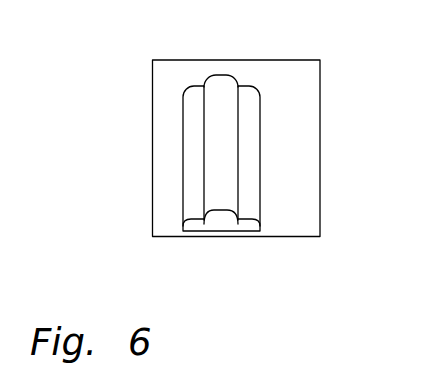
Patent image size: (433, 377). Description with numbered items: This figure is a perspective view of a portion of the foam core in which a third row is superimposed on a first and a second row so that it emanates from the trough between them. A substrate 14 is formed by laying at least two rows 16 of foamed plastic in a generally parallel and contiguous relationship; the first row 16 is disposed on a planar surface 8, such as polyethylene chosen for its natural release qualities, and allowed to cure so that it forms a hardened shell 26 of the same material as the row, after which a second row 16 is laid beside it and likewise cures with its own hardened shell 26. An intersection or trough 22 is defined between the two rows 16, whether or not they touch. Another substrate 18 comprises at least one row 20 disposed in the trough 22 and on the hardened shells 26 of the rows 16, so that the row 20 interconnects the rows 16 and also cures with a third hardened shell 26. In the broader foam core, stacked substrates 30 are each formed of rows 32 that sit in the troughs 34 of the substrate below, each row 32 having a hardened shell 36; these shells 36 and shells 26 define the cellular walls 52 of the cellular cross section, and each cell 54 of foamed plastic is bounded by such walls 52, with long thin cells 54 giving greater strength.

The planar surface 8 is at (162, 108).
The substrate 14 is at (183, 153).
The row 16 is at (193, 183).
The substrate 18 is at (238, 138).
The row 20 is at (217, 163).
The trough 22 is at (218, 228).
The hardened shell 26 is at (196, 222).
The substrate 30 is at (228, 73).
The row 32 is at (217, 93).
The trough 34 is at (224, 228).
The hardened shell 36 is at (206, 226).
The cellular wall 52 is at (192, 228).
The cell 54 is at (197, 228).